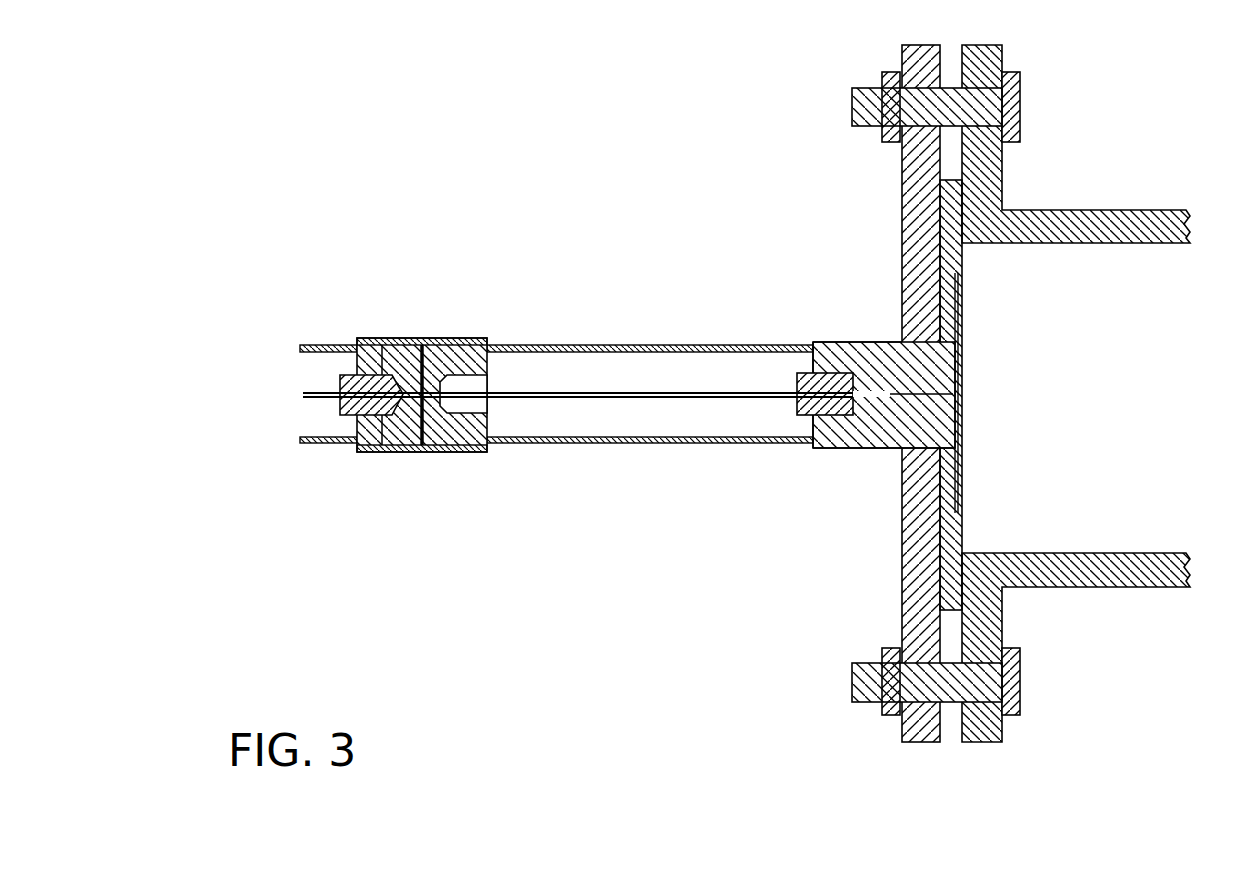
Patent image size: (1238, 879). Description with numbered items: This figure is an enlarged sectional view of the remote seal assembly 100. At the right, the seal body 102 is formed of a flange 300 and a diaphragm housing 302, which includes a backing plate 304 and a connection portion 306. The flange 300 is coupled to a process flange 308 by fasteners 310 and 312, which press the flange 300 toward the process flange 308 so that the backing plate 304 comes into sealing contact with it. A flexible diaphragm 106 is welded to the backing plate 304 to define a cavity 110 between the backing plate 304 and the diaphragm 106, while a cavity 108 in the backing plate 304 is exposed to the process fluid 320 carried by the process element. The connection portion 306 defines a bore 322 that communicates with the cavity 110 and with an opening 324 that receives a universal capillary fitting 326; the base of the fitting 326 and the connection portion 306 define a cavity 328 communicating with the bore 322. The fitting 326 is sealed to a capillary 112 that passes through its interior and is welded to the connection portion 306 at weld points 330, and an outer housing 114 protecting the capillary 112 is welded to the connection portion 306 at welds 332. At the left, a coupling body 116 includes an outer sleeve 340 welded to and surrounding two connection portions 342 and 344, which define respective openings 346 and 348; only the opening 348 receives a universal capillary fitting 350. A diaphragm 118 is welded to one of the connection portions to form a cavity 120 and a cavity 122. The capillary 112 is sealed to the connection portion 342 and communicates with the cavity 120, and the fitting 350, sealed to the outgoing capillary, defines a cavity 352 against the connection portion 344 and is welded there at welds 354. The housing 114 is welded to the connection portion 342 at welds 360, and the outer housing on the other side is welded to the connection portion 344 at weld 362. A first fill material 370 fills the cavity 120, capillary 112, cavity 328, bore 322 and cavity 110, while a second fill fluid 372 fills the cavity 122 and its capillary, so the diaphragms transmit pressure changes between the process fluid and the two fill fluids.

The remote seal assembly 100 is at (655, 185).
The seal body 102 is at (825, 175).
The flexible diaphragm 106 is at (962, 293).
The cavity 108 is at (962, 324).
The cavity 110 is at (962, 396).
The capillary 112 is at (672, 391).
The housing 114 is at (612, 345).
The coupling body 116 is at (398, 312).
The flexible diaphragm 118 is at (427, 338).
The cavity 120 is at (437, 450).
The cavity 122 is at (402, 450).
The flange 300 is at (902, 543).
The diaphragm housing 302 is at (890, 325).
The backing plate 304 is at (962, 543).
The connection portion 306 is at (864, 448).
The process flange 308 is at (957, 744).
The fastener 310 is at (852, 685).
The fastener 312 is at (852, 106).
The process fluid 320 is at (1118, 442).
The bore 322 is at (920, 393).
The opening 324 is at (823, 345).
The universal capillary fitting 326 is at (797, 414).
The cavity 328 is at (838, 345).
The weld points 330 is at (860, 392).
The welds 332 is at (812, 447).
The outer sleeve 340 is at (477, 338).
The connection portion 342 is at (478, 452).
The connection portion 344 is at (355, 448).
The opening 346 is at (487, 410).
The opening 348 is at (400, 397).
The universal capillary fitting 350 is at (352, 416).
The cavity 352 is at (390, 397).
The welds 354 is at (348, 378).
The welds 360 is at (497, 342).
The weld 362 is at (358, 340).
The fill material 370 is at (636, 398).
The fill fluid 372 is at (303, 395).